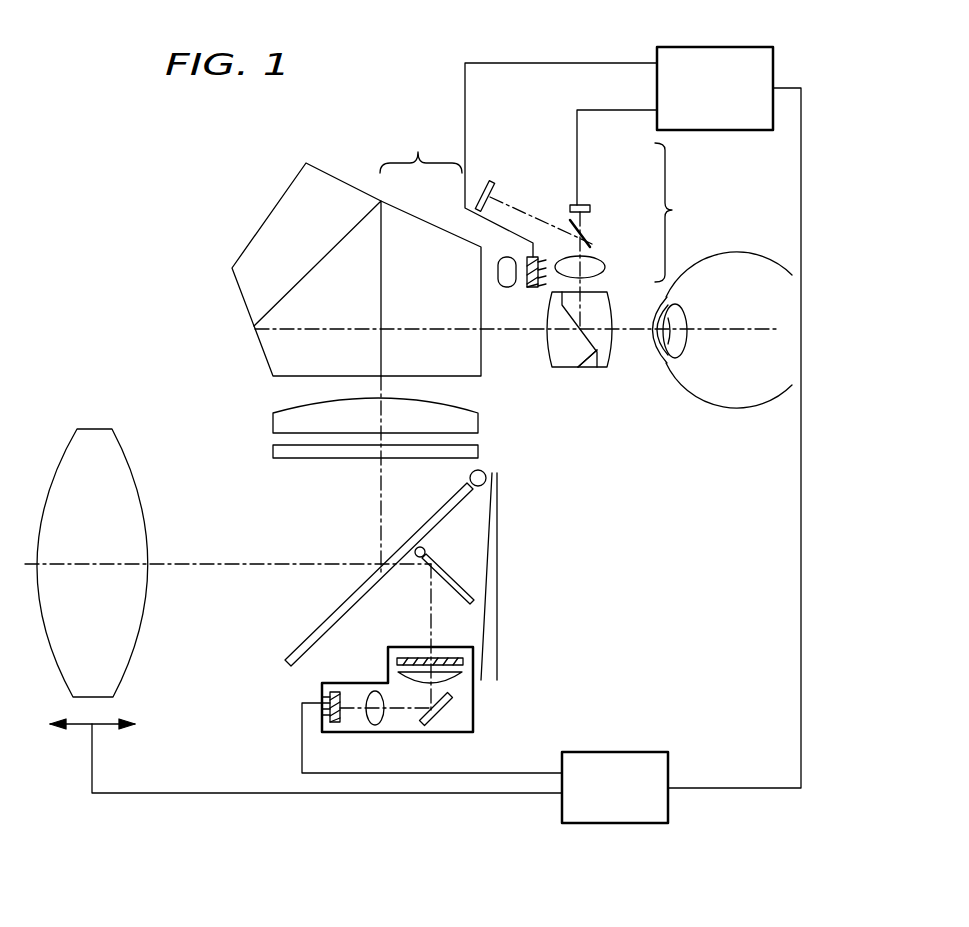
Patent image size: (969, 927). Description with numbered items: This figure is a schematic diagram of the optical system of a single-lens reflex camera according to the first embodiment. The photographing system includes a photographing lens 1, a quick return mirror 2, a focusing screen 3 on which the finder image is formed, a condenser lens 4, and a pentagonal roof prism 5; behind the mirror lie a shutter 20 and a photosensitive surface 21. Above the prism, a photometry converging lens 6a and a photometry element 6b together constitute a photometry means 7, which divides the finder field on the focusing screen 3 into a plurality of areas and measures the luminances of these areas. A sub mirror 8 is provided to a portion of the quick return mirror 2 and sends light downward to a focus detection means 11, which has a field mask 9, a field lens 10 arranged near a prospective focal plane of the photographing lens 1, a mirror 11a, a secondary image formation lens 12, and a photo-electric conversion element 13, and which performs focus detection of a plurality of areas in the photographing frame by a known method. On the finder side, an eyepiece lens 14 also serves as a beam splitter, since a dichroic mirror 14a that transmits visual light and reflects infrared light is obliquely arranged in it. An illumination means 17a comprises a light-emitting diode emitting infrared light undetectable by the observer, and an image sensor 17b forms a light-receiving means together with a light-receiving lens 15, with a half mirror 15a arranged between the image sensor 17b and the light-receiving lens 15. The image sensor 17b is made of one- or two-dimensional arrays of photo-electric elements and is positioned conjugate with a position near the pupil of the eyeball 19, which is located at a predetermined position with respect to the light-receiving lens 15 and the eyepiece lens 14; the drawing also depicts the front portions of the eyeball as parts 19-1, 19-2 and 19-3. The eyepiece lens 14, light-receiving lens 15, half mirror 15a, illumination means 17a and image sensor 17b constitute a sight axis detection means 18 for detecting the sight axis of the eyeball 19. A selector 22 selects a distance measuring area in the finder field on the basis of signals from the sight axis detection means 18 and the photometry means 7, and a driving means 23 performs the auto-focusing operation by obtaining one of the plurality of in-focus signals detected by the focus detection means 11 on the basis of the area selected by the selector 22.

The photographing lens 1 is at (100, 428).
The quick return mirror 2 is at (310, 640).
The focusing screen 3 is at (480, 453).
The condenser lens 4 is at (480, 424).
The pentagonal roof prism 5 is at (283, 196).
The photometry converging lens 6a is at (502, 257).
The photometry element 6b is at (527, 257).
The photometry means 7 is at (421, 145).
The sub mirror 8 is at (455, 585).
The field mask 9 is at (450, 657).
The field lens 10 is at (455, 680).
The focus detection means 11 is at (358, 683).
The mirror 11a is at (442, 718).
The secondary image formation lens 12 is at (375, 725).
The photo-electric conversion element 13 is at (337, 722).
The eyepiece lens 14 is at (610, 297).
The dichroic mirror 14a is at (575, 368).
The light-receiving lens 15 is at (604, 262).
The half mirror 15a is at (590, 240).
The illumination means 17a is at (493, 183).
The image sensor 17b is at (590, 208).
The sight axis detection means 18 is at (678, 212).
The eyeball 19 is at (755, 250).
The cornea 19-1 is at (648, 350).
The crystalline lens 19-2 is at (665, 342).
The iris 19-3 is at (687, 308).
The shutter 20 is at (492, 545).
The photosensitive surface 21 is at (497, 600).
The selector 22 is at (752, 47).
The driving means 23 is at (653, 752).